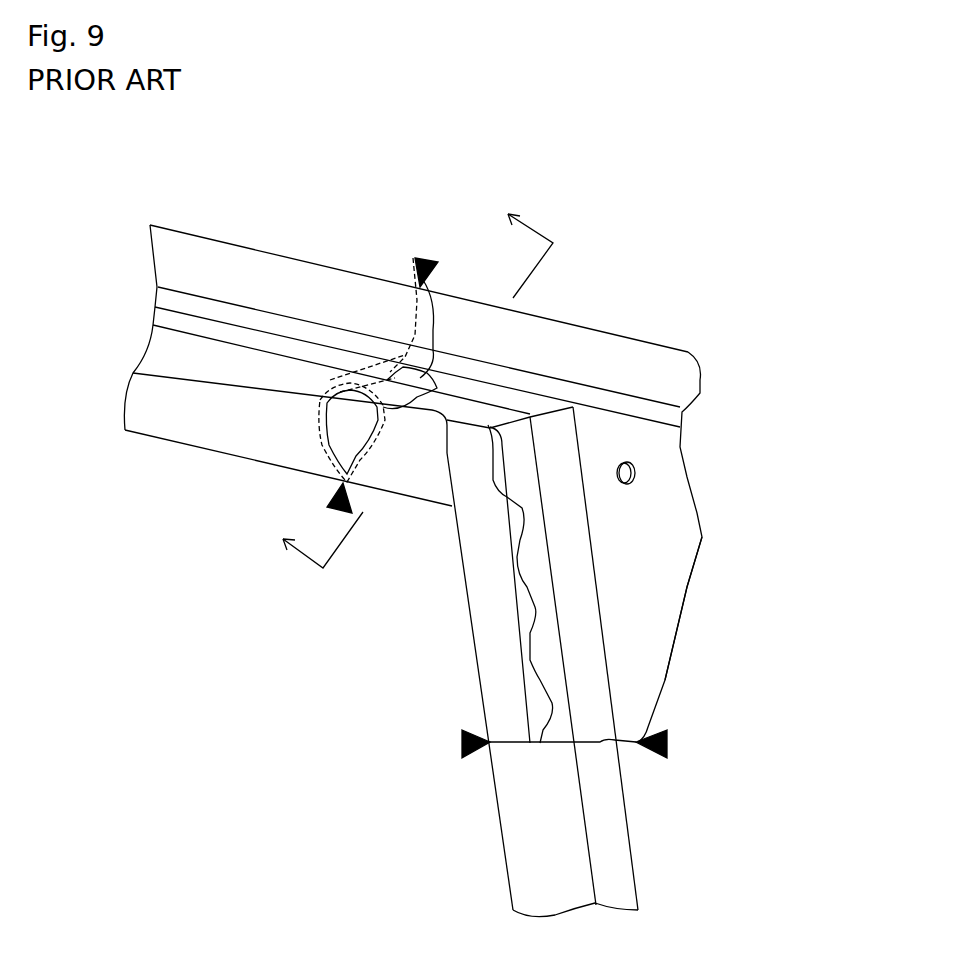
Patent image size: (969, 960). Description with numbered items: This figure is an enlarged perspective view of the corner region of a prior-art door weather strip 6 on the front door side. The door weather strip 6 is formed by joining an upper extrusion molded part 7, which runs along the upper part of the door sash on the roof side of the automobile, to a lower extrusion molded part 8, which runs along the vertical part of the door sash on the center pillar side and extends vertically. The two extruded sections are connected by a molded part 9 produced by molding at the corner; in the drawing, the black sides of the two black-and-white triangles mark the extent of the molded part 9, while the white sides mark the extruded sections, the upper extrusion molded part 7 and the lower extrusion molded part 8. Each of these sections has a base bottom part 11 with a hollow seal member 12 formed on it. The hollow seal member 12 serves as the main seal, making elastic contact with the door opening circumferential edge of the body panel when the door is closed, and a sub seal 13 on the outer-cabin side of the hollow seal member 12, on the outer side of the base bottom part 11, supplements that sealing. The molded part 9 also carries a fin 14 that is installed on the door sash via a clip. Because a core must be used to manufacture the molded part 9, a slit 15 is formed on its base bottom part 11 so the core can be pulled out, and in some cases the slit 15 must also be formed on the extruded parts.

The door weather strip 6 is at (699, 253).
The upper extrusion molded part 7 is at (212, 426).
The lower extrusion molded part 8 is at (512, 853).
The molded part 9 is at (646, 521).
The base bottom part 11 is at (468, 410).
The hollow seal member 12 is at (342, 382).
The sub seal 13 is at (550, 317).
The fin 14 is at (653, 635).
The slit 15 is at (527, 610).